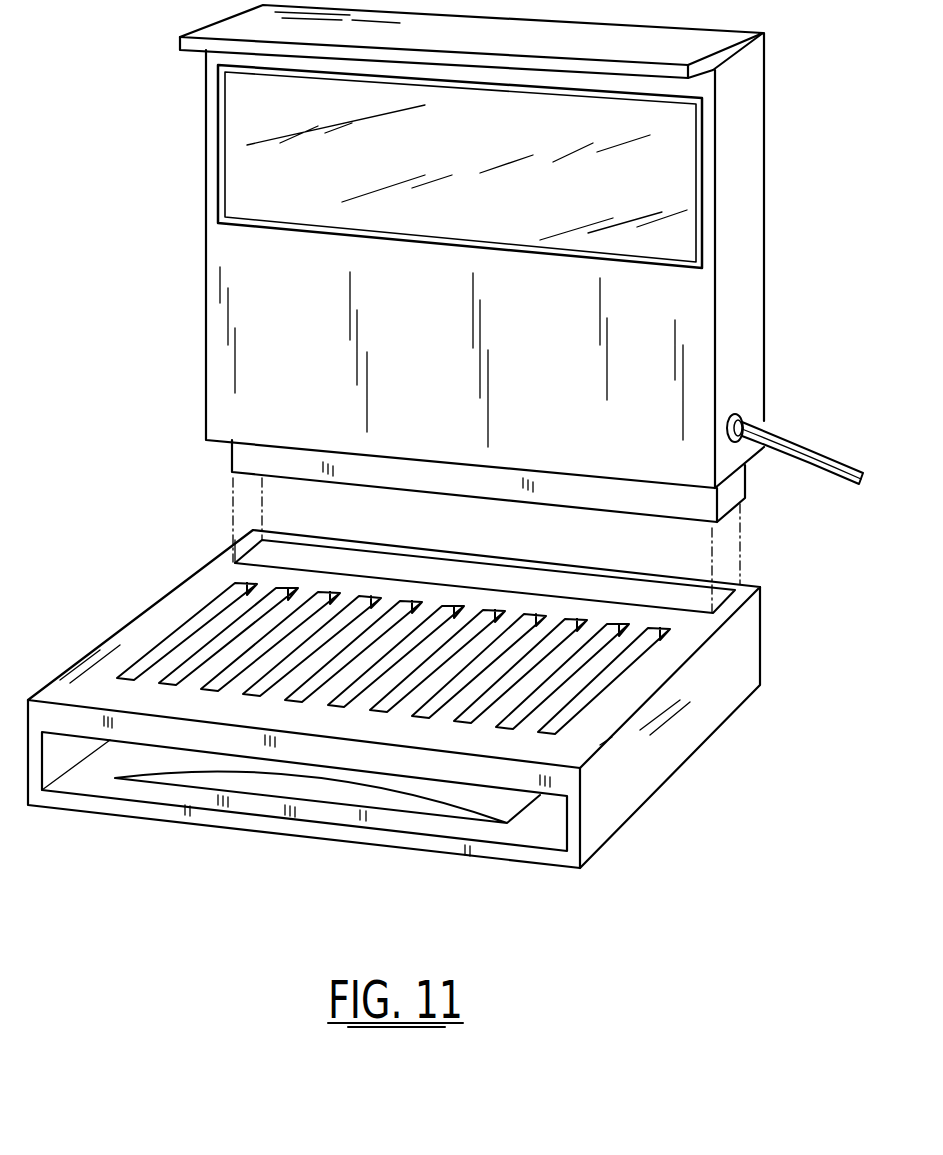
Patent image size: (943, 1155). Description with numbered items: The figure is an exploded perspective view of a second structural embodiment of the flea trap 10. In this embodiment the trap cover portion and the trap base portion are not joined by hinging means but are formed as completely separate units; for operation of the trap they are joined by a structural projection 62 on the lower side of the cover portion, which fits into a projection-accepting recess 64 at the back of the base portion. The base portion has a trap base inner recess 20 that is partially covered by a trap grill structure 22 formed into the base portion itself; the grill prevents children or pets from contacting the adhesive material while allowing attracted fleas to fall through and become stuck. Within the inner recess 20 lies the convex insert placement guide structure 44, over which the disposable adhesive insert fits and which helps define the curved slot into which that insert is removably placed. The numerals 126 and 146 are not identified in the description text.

The flea trap 10 is at (180, 257).
The upper housing with display window 126 is at (765, 297).
The structural projection 62 is at (730, 492).
The projection-accepting recess 64 is at (563, 588).
The trap grill structure 22 is at (220, 623).
The trap base inner recess 20 is at (82, 750).
The convex insert placement guide structure 44 is at (362, 800).
The drip tray housing 146 is at (667, 777).